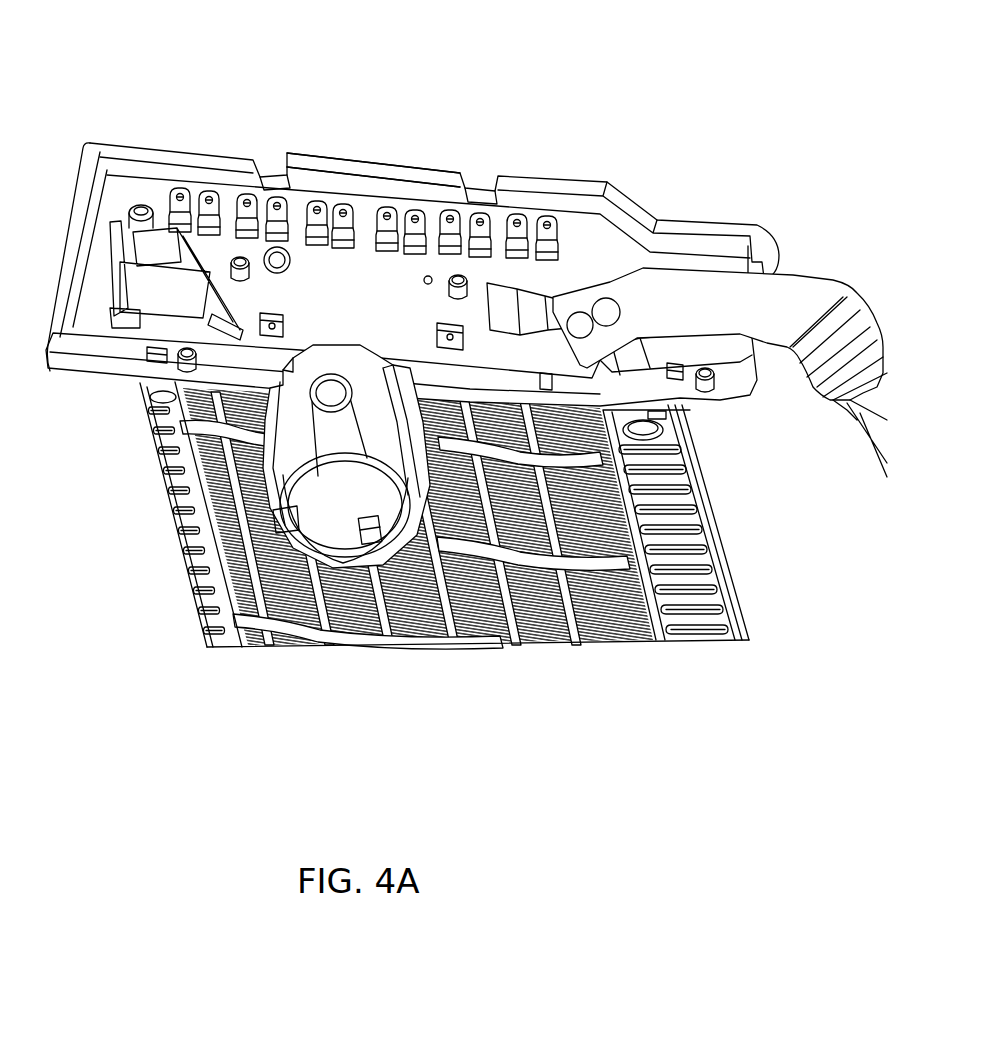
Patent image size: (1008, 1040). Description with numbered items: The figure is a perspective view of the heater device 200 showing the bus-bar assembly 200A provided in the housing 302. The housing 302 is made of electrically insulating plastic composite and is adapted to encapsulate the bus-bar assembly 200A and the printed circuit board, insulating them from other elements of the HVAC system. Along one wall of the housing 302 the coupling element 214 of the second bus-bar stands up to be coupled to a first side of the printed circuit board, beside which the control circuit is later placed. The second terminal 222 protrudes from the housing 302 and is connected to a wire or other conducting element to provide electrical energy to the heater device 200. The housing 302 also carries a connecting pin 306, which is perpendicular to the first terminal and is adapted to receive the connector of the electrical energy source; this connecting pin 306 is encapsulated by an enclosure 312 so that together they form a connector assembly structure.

The heater device 200 is at (691, 722).
The bus-bar assembly 200A is at (208, 170).
The coupling element 214 is at (244, 210).
The housing 302 is at (405, 176).
The second terminal 222 is at (613, 283).
The connecting pin 306 is at (330, 447).
The enclosure 312 is at (343, 520).